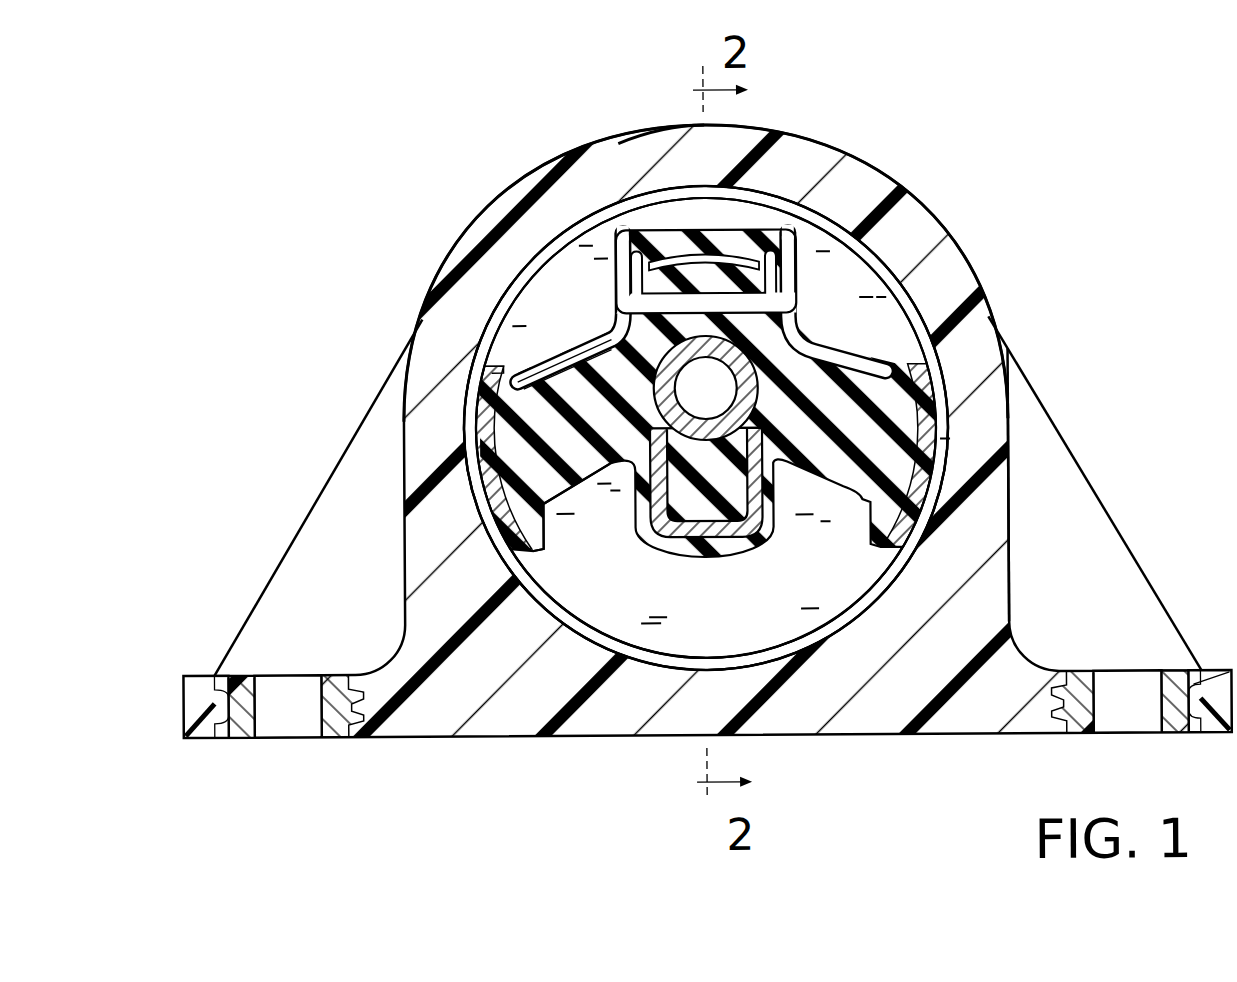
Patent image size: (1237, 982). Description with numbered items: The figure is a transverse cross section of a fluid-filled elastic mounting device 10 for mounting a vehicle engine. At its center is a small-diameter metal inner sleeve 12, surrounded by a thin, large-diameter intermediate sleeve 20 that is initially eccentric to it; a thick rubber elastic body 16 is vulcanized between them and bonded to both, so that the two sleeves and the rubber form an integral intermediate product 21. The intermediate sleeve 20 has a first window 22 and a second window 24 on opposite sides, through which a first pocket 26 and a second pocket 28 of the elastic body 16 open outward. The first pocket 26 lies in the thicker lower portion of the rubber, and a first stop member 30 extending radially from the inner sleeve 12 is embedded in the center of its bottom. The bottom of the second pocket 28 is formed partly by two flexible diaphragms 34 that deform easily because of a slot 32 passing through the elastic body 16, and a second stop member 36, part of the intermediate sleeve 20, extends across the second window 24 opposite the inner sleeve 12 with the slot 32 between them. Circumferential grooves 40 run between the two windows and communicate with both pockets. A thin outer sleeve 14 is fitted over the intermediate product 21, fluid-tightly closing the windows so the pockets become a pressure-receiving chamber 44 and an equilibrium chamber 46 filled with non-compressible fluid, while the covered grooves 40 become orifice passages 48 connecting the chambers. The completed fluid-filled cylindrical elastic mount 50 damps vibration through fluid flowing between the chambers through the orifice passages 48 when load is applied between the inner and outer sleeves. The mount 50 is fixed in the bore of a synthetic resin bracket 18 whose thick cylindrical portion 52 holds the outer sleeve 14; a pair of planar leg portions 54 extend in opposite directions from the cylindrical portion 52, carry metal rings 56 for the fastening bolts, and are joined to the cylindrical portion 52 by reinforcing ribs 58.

The fluid-filled elastic mounting device 10 is at (484, 180).
The inner sleeve 12 is at (1001, 346).
The outer sleeve 14 is at (550, 250).
The elastic body 16 is at (567, 440).
The bracket 18 is at (952, 208).
The intermediate sleeve 20 is at (920, 420).
The integral intermediate product 21 is at (470, 505).
The first window 22 is at (543, 550).
The second window 24 is at (490, 363).
The first pocket 26 is at (790, 655).
The second pocket 28 is at (577, 335).
The first stop member 30 is at (693, 527).
The slot 32 is at (572, 330).
The flexible diaphragms 34 is at (807, 327).
The second stop member 36 is at (713, 253).
The grooves 40 is at (470, 408).
The pressure-receiving chamber 44 is at (745, 623).
The equilibrium chamber 46 is at (820, 247).
The orifice passages 48 is at (490, 455).
The fluid-filled cylindrical elastic mount 50 is at (908, 590).
The cylindrical portion 52 is at (633, 168).
The planar leg portions 54 is at (198, 682).
The metal rings 56 is at (240, 725).
The reinforcing ribs 58 is at (268, 608).